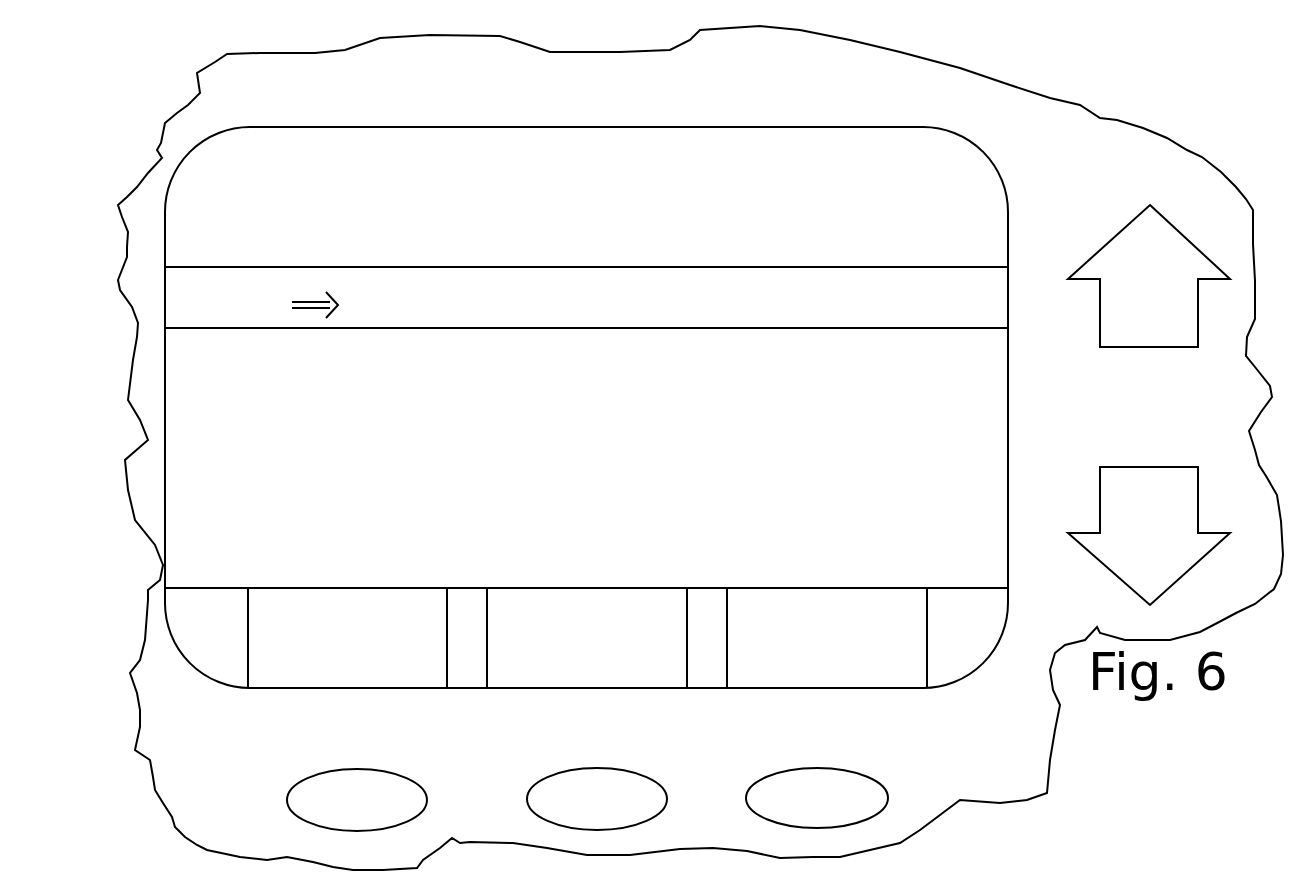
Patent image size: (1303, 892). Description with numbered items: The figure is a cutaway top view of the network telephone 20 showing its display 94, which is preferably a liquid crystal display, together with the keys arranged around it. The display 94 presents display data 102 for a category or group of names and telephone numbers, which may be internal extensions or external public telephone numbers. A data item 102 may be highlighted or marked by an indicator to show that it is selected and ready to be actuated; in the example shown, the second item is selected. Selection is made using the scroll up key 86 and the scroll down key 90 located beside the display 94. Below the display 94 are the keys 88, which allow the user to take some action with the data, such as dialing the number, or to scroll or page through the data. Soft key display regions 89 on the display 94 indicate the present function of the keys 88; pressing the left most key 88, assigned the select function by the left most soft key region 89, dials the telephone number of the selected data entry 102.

The network telephone 20 is at (972, 115).
The display 94 is at (692, 122).
The display data 102 is at (543, 282).
The scroll up key 86 is at (1128, 265).
The scroll down key 90 is at (1115, 505).
The keys 88 is at (310, 806).
The soft key display regions 89 is at (307, 677).